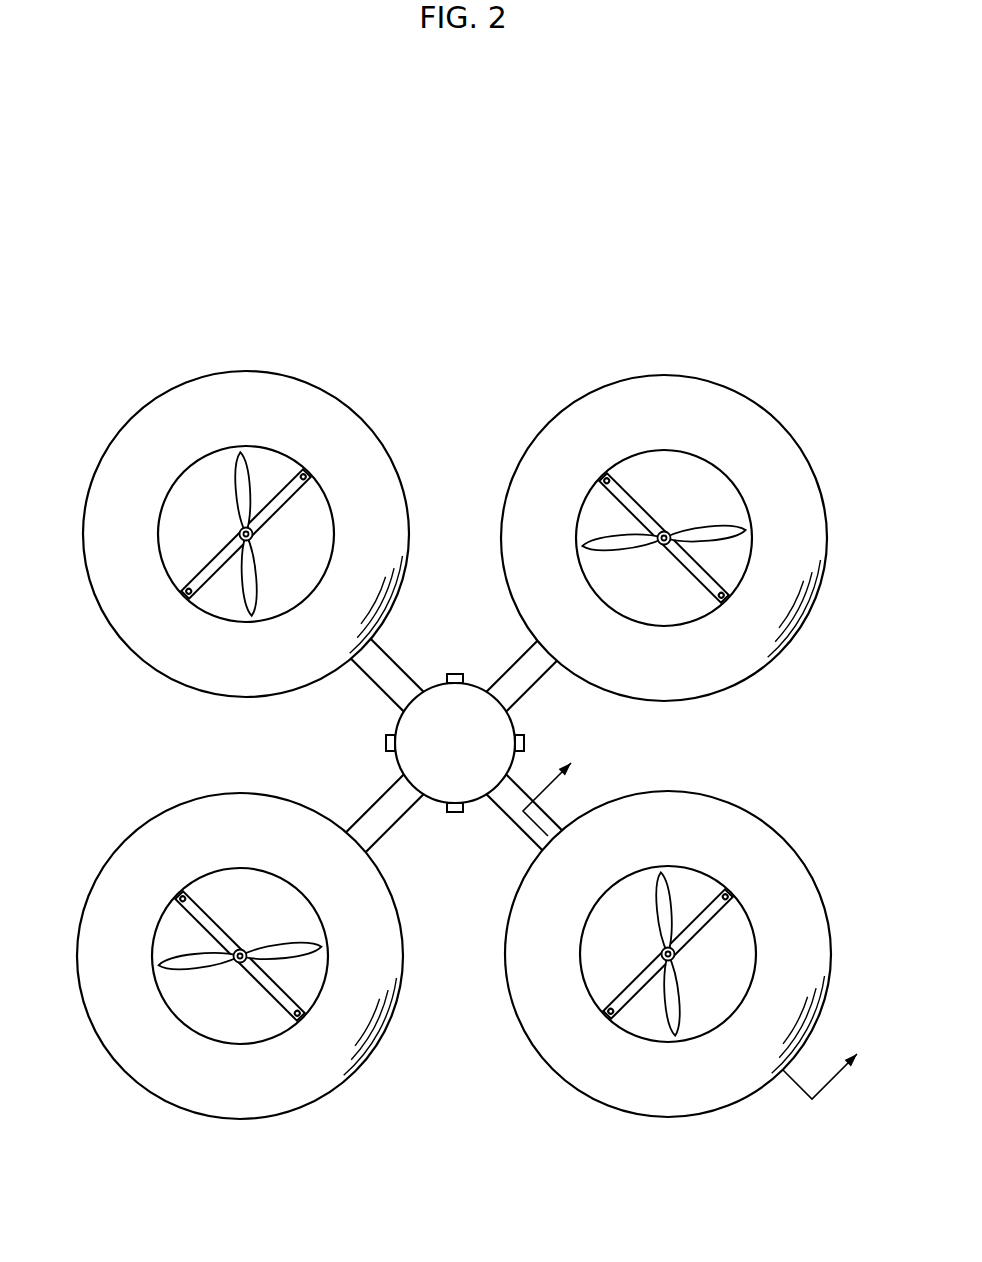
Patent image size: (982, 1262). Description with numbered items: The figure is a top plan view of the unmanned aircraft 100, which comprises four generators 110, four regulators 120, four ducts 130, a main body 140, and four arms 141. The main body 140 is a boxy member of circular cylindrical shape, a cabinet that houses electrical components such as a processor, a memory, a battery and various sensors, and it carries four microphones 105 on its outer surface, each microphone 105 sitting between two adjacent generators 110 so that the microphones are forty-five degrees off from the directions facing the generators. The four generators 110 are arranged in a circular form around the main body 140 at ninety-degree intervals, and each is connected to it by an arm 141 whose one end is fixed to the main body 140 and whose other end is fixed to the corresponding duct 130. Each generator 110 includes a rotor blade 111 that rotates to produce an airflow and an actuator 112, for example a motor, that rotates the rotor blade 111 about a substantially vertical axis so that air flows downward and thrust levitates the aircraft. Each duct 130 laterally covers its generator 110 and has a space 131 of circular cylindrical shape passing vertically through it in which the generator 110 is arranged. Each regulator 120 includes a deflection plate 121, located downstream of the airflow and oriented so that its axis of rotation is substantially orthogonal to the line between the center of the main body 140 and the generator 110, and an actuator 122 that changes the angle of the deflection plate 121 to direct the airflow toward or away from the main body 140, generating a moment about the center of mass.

The unmanned aircraft 100 is at (242, 322).
The microphone 105 is at (454, 674).
The generator 110 is at (394, 683).
The rotor blade 111 is at (242, 530).
The actuator 112 is at (240, 478).
The regulator 120 is at (426, 779).
The deflection plate 121 is at (262, 643).
The actuator 122 is at (205, 578).
The duct 130 is at (343, 413).
The space 131 is at (320, 517).
The main body 140 is at (510, 722).
The arm 141 is at (382, 648).